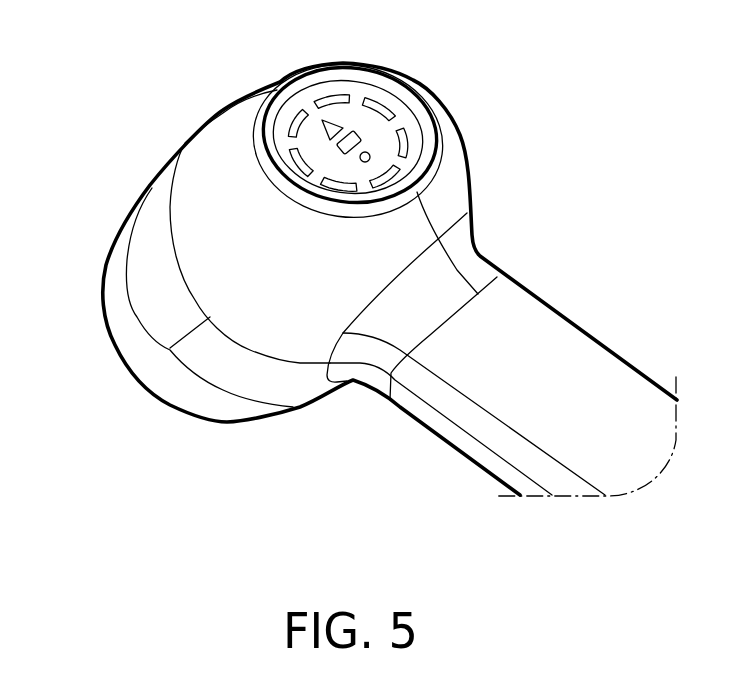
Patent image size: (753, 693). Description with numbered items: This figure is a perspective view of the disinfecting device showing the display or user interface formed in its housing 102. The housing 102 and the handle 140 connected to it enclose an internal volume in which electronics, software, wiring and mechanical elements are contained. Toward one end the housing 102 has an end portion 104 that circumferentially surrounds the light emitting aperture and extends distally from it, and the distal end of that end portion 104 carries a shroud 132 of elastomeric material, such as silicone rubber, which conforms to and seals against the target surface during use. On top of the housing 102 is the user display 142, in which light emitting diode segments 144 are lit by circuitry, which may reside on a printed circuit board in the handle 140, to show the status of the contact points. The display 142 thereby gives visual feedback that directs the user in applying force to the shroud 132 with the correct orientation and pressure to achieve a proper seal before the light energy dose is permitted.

The housing 102 is at (213, 178).
The end portion 104 is at (227, 425).
The shroud 132 is at (113, 277).
The handle 140 is at (452, 410).
The user display 142 is at (398, 106).
The light emitting diode (LED) segment 144 is at (327, 100).